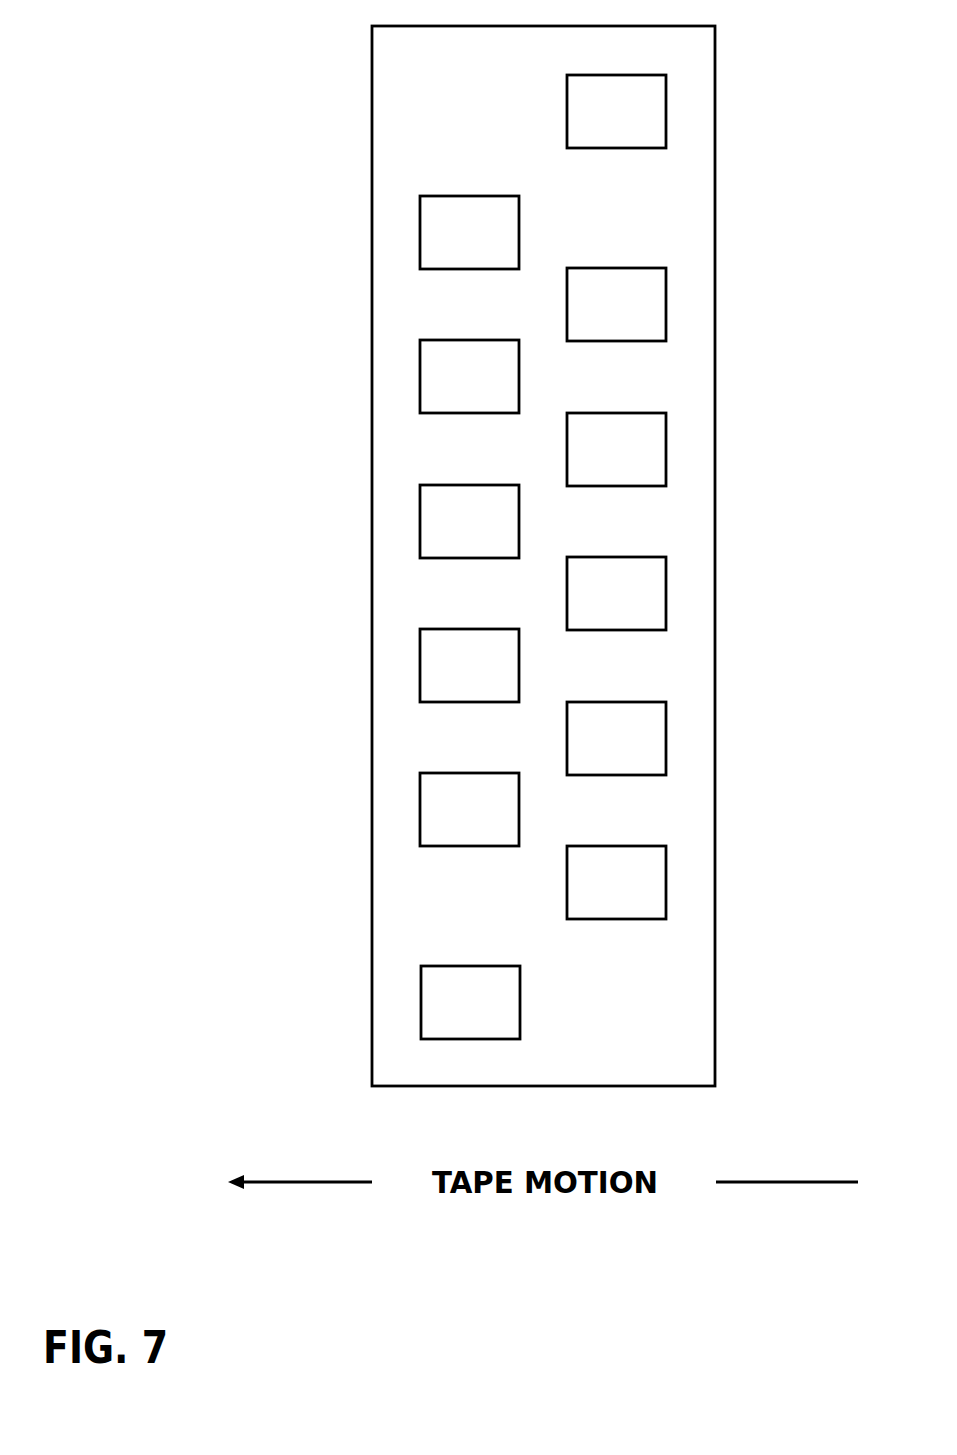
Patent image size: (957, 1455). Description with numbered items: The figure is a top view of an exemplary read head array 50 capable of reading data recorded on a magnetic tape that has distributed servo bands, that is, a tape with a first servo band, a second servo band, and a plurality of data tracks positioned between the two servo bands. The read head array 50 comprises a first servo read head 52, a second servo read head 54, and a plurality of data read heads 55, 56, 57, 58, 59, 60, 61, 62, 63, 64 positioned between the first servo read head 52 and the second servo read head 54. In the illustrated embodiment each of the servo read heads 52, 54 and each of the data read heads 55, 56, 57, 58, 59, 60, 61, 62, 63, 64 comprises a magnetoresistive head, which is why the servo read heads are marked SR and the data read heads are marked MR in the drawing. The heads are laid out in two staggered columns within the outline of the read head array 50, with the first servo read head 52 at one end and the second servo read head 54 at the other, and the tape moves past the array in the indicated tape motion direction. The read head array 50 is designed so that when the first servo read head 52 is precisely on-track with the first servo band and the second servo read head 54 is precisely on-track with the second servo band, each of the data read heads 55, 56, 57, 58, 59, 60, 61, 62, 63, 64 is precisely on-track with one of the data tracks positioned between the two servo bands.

The read head array 50 is at (396, 122).
The first servo read head 52 is at (681, 112).
The second servo read head 54 is at (407, 1003).
The data read head 55 is at (406, 233).
The data read head 56 is at (680, 305).
The data read head 57 is at (406, 377).
The data read head 58 is at (680, 450).
The data read head 59 is at (406, 522).
The data read head 60 is at (680, 594).
The data read head 61 is at (406, 666).
The data read head 62 is at (680, 739).
The data read head 63 is at (406, 810).
The data read head 64 is at (680, 883).